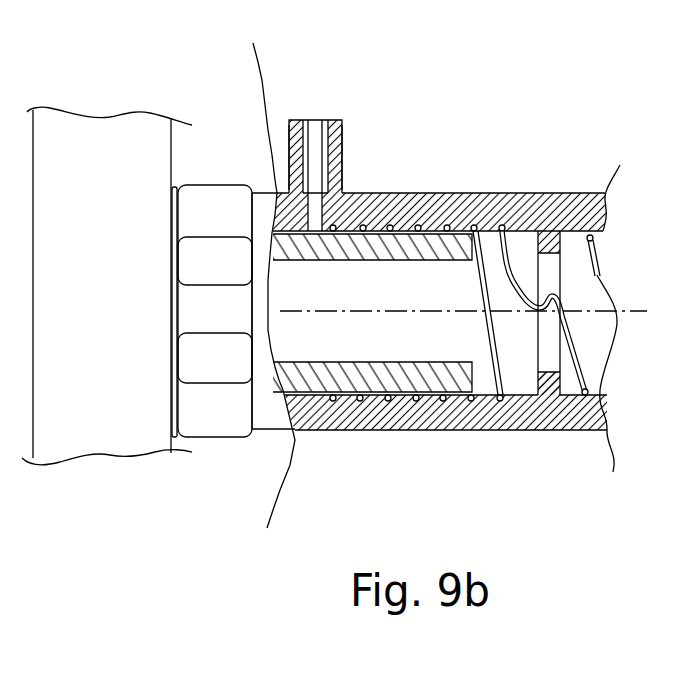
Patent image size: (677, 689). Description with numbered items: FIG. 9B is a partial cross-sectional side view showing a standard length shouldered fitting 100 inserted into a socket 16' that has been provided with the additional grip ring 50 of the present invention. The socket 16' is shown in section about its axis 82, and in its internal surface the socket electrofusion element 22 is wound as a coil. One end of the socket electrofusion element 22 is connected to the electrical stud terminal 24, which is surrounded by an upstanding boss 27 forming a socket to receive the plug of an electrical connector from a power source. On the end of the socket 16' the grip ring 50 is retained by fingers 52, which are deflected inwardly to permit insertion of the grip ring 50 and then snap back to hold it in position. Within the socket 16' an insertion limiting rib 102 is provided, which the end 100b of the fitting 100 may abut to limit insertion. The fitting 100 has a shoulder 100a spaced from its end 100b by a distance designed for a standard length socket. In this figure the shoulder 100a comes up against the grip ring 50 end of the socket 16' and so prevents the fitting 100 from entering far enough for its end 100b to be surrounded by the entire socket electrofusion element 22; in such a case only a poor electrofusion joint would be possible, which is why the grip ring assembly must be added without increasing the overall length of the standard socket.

The shouldered fitting 100 is at (143, 97).
The shoulder 100a is at (174, 444).
The end of the fitting 100b is at (470, 370).
The second electrical stud terminal 24 is at (312, 120).
The upstanding boss 27 is at (342, 157).
The socket electrofusion element 22 is at (392, 226).
The socket 16' is at (436, 285).
The axis 82 is at (463, 298).
The fingers 52 is at (177, 187).
The grip ring 50 is at (231, 185).
The insertion limiting rib 102 is at (553, 380).